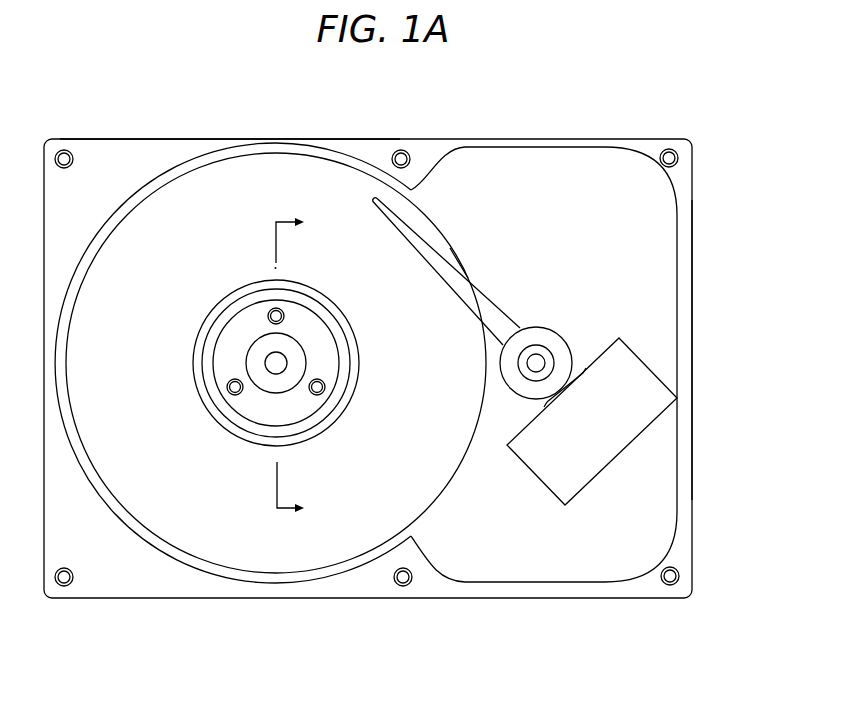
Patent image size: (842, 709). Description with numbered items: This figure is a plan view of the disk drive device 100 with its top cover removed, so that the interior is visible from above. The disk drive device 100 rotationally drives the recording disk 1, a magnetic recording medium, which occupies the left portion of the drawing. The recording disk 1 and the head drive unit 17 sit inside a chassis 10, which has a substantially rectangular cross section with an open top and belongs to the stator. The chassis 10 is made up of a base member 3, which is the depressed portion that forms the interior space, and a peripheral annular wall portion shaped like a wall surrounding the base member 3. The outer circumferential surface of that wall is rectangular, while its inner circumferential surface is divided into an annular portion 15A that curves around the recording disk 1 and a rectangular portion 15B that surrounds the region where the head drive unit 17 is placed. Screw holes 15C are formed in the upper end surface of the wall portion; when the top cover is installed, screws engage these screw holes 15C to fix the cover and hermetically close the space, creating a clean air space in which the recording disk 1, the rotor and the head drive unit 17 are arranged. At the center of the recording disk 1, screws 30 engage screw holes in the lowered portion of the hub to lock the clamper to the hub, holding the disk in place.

The disk drive device 100 is at (402, 88).
The recording disk 1 is at (279, 170).
The base member 3 is at (502, 167).
The chassis 10 is at (706, 496).
The annular portion 15A is at (126, 139).
The rectangular portion 15B is at (686, 310).
The screw hole 15C is at (668, 149).
The head drive unit 17 is at (623, 416).
The screw 30 is at (268, 310).